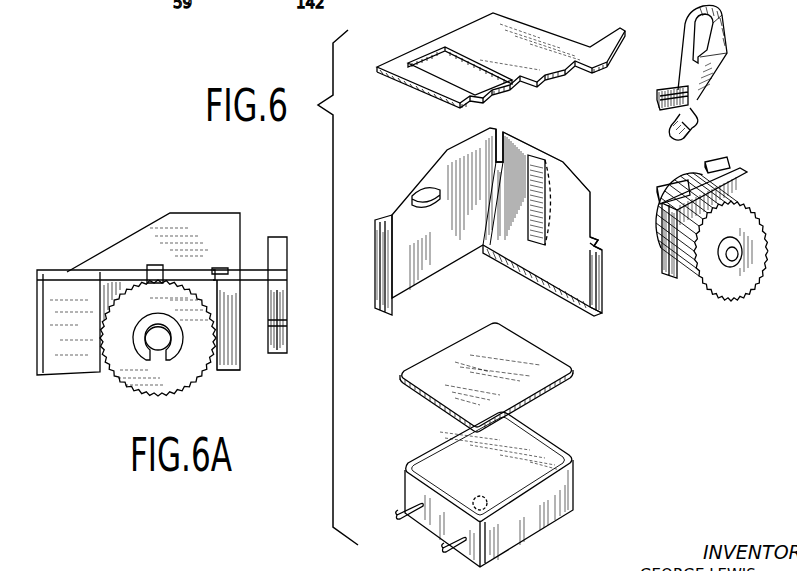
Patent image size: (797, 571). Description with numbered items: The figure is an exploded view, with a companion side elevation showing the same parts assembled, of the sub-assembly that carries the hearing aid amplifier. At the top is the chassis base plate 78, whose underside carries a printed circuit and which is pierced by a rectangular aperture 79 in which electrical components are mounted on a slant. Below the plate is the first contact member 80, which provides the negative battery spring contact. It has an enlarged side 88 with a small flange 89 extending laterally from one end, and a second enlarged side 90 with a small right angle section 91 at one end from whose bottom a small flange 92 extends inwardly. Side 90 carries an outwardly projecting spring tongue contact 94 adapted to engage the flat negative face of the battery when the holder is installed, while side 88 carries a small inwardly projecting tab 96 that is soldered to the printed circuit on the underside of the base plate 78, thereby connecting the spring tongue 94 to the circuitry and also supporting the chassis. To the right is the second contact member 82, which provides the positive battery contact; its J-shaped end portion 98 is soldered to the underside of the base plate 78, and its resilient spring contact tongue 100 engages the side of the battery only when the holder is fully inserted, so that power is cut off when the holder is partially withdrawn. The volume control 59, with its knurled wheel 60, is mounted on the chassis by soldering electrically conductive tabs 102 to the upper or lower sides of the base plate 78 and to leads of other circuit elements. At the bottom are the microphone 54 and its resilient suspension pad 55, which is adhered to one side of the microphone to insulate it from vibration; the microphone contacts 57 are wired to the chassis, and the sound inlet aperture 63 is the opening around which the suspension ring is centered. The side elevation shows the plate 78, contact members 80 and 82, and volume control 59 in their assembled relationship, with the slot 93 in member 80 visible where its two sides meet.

In FIG. 6, the microphone 54 is at (513, 530).
In FIG. 6, the suspension pad 55 is at (549, 367).
In FIG. 6, the microphone contacts 57 is at (447, 548).
In FIG. 6, the volume control 59 is at (709, 230).
In FIG. 6A, the volume control 59 is at (147, 326).
In FIG. 6, the knurled wheel 60 is at (742, 288).
In FIG. 6A, the knurled wheel 60 is at (193, 380).
In FIG. 6, the sound inlet aperture 63 is at (483, 496).
In FIG. 6, the base plate 78 is at (515, 40).
In FIG. 6A, the base plate 78 is at (117, 270).
In FIG. 6, the rectangular aperture 79 is at (432, 52).
In FIG. 6, the first contact member 80 is at (503, 223).
In FIG. 6A, the first contact member 80 is at (172, 276).
In FIG. 6, the second contact member 82 is at (740, 34).
In FIG. 6A, the second contact member 82 is at (297, 244).
In FIG. 6, the enlarged side 88 is at (462, 251).
In FIG. 6A, the enlarged side 88 is at (197, 225).
In FIG. 6, the small flange 89 is at (384, 298).
In FIG. 6, the enlarged side 90 is at (578, 261).
In FIG. 6A, the enlarged side 90 is at (240, 245).
In FIG. 6, the right angle section 91 is at (597, 249).
In FIG. 6, the small flange 92 is at (560, 283).
In FIG. 6, the slot 93 is at (498, 147).
In FIG. 6, the spring tongue contact 94 is at (545, 200).
In FIG. 6, the tab 96 is at (432, 210).
In FIG. 6, the J-shaped end portion 98 is at (688, 105).
In FIG. 6A, the J-shaped end portion 98 is at (222, 268).
In FIG. 6, the spring contact tongue 100 is at (687, 127).
In FIG. 6A, the spring contact tongue 100 is at (287, 320).
In FIG. 6, the electrically conductive tabs 102 is at (668, 186).
In FIG. 6A, the electrically conductive tabs 102 is at (86, 322).